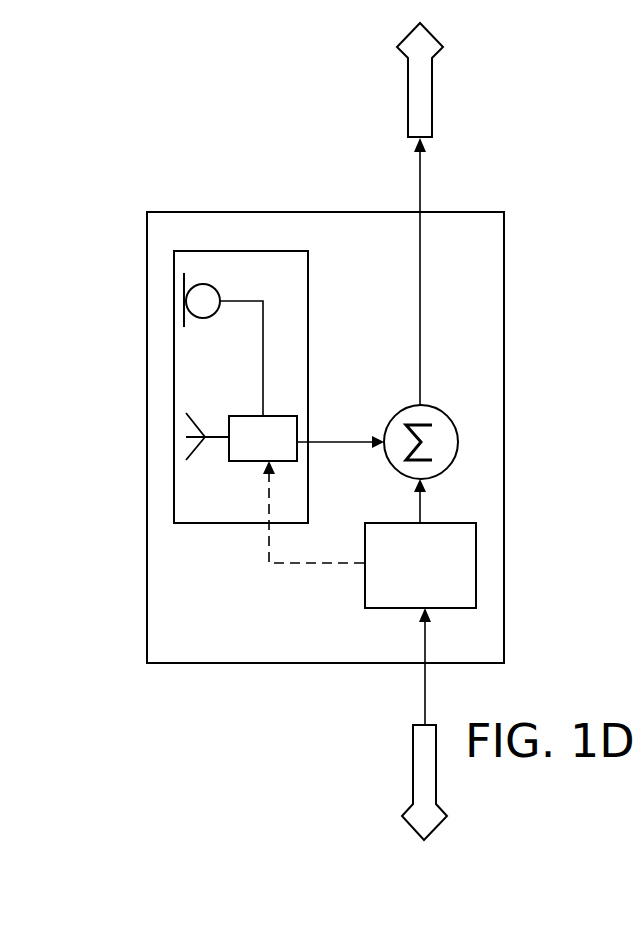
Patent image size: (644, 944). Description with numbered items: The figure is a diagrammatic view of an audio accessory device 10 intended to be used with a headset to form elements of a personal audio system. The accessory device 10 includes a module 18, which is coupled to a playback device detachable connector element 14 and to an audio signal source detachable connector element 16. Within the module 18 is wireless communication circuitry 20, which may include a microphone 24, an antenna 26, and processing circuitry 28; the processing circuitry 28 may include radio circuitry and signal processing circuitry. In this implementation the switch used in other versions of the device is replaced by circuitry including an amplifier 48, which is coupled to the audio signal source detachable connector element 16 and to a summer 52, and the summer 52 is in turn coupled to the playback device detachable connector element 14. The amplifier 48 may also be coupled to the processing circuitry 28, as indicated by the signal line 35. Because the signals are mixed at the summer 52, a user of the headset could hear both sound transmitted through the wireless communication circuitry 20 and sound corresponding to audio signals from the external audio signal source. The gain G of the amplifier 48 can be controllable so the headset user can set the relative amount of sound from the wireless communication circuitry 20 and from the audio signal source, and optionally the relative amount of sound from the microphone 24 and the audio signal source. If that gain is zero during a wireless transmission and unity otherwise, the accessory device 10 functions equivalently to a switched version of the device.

The accessory device 10 is at (278, 170).
The playback device detachable connector element 14 is at (408, 87).
The audio signal source detachable connector element 16 is at (415, 754).
The module 18 is at (165, 665).
The wireless communication circuitry 20 is at (174, 363).
The microphone 24 is at (211, 284).
The antenna 26 is at (178, 455).
The processing circuitry 28 is at (247, 416).
The signal line 35 is at (297, 563).
The amplifier 48 is at (458, 523).
The summer 52 is at (445, 415).